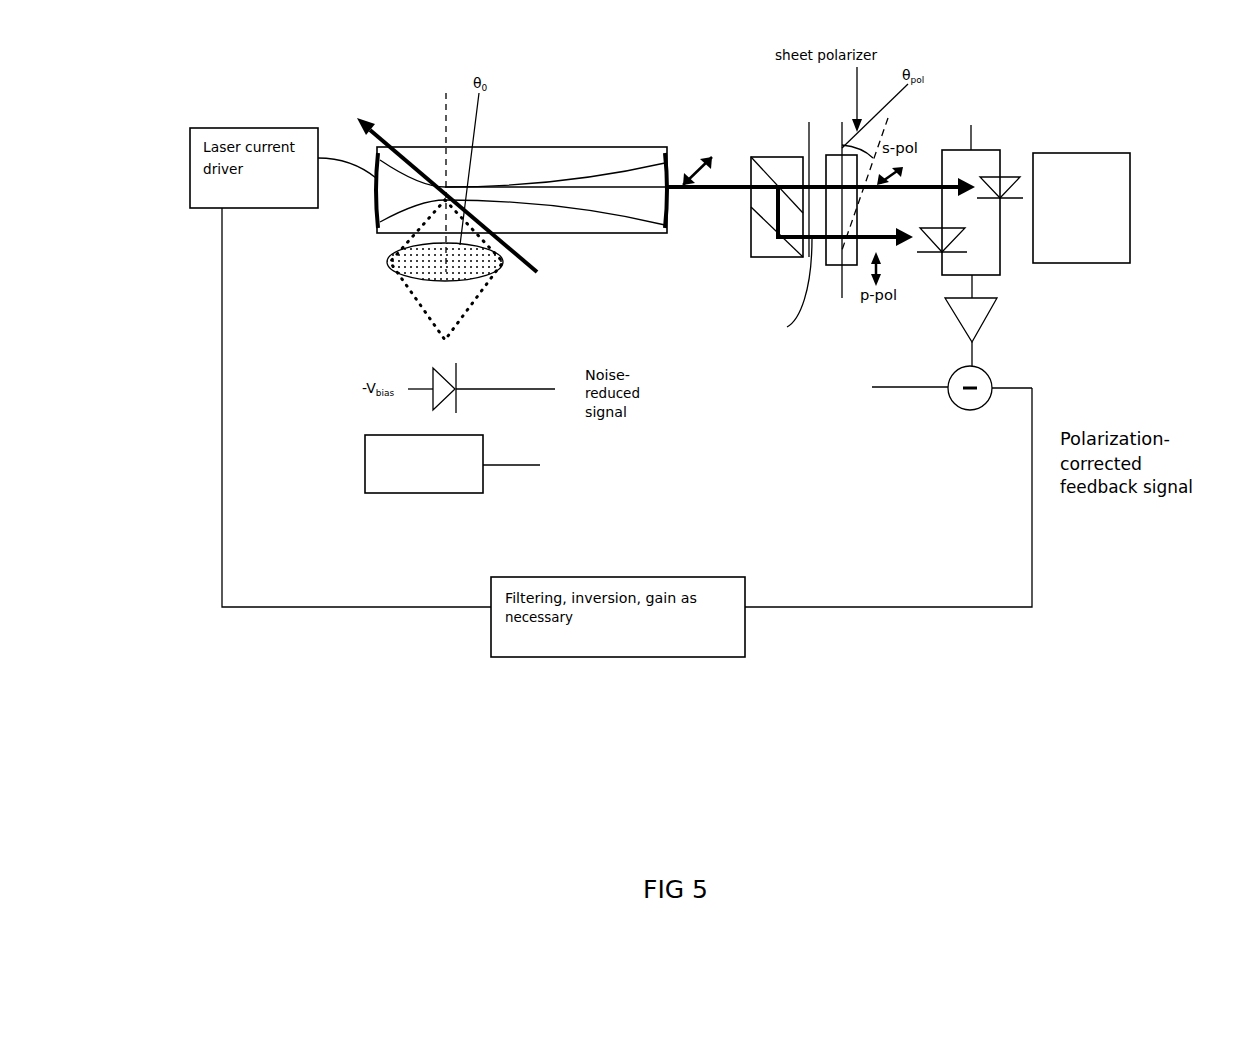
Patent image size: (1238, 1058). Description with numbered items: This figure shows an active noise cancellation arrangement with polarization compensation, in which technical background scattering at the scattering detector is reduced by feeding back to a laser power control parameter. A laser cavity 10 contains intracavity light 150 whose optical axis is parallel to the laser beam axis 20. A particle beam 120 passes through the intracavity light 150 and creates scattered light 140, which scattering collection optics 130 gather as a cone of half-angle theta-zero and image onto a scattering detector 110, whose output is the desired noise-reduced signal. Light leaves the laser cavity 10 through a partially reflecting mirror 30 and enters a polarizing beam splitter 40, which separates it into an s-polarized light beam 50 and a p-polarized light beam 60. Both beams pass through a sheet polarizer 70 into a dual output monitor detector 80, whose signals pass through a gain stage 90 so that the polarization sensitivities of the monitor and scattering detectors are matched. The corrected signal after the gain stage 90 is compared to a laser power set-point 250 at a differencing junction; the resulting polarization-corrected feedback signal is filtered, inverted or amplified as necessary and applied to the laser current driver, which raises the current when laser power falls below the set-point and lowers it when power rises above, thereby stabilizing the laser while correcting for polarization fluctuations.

The laser cavity 10 is at (620, 105).
The laser beam axis 20 is at (715, 190).
The partially reflecting mirror 30 is at (668, 208).
The polarizing beam splitter 40 is at (762, 152).
The s-polarized light beam 50 is at (799, 175).
The p-polarized light beam 60 is at (787, 327).
The sheet polarizer 70 is at (857, 265).
The dual output monitor detector 80 is at (1130, 232).
The gain stage 90 is at (985, 327).
The scattering detector 110 is at (478, 464).
The particle beam 120 is at (386, 137).
The scattering collection optics 130 is at (498, 262).
The scattered light 140 is at (376, 225).
The intracavity light 150 is at (573, 192).
The laser power set-point 250 is at (893, 420).